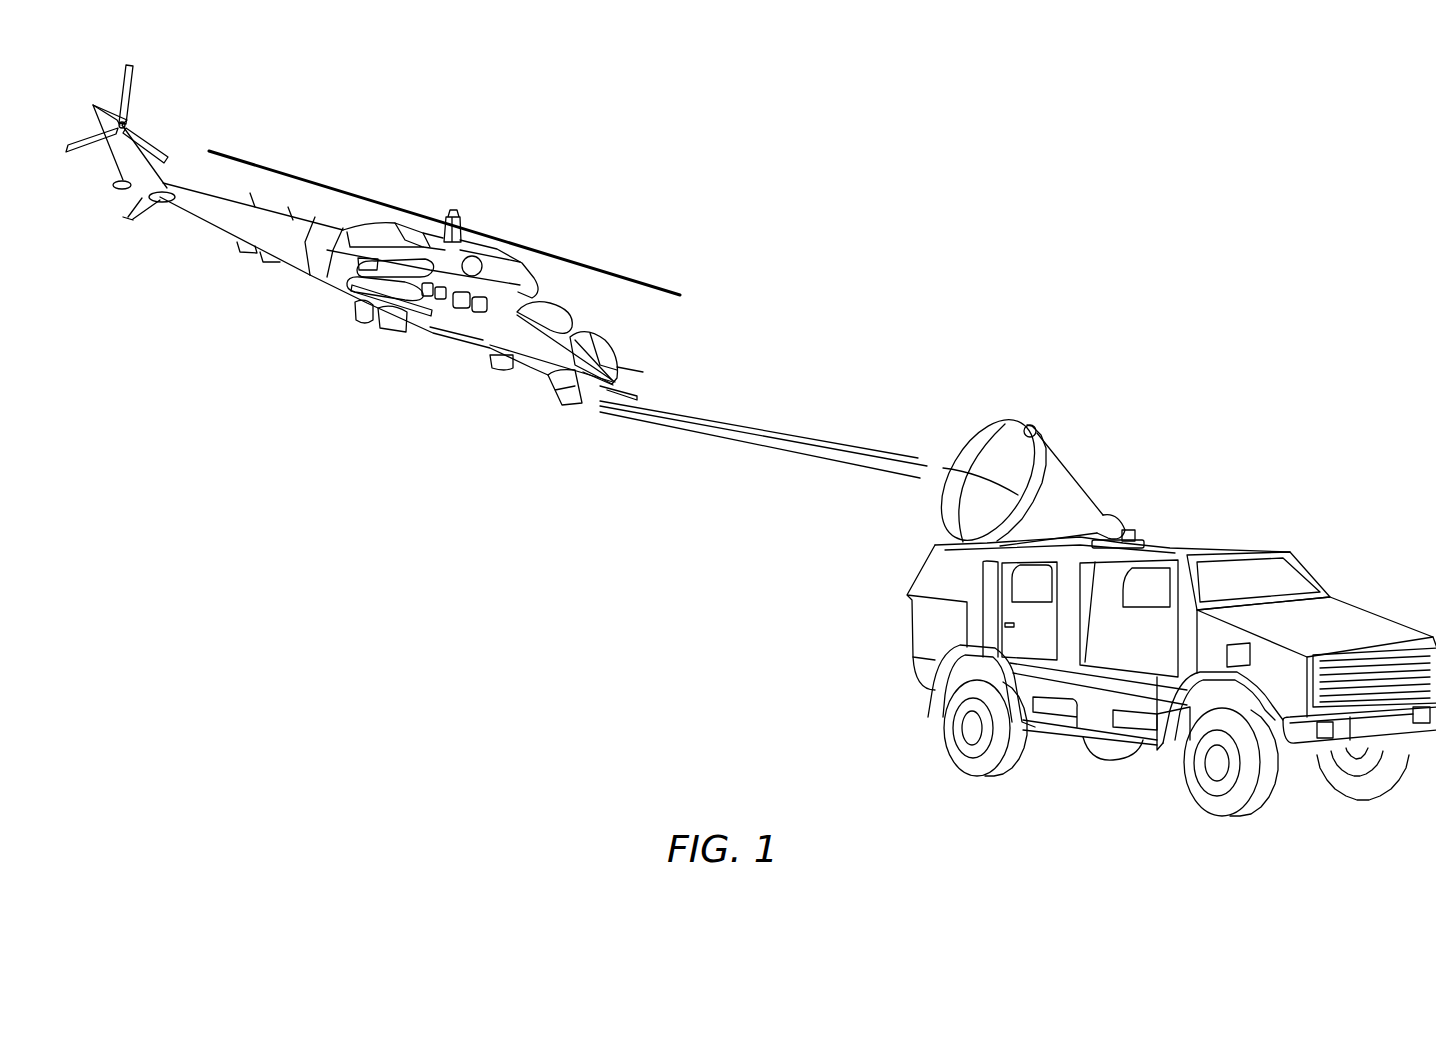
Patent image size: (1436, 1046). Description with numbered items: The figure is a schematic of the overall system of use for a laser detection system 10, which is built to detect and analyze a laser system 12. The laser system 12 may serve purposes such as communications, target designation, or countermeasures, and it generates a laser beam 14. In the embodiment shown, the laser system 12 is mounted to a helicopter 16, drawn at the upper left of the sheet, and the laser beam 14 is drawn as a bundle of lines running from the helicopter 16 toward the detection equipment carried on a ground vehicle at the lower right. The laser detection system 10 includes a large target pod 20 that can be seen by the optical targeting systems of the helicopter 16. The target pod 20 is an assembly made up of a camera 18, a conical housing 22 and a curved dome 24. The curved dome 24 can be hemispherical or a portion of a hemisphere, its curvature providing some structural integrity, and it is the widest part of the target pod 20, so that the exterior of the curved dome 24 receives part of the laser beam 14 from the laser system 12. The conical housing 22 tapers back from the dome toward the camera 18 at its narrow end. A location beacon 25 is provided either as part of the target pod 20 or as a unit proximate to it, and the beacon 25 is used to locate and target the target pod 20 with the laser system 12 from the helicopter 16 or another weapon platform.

The laser detection system 10 is at (1051, 443).
The laser system 12 is at (567, 405).
The laser beam 14 is at (820, 438).
The helicopter 16 is at (380, 330).
The camera 18 is at (1113, 528).
The target pod 20 is at (1067, 467).
The conical housing 22 is at (1068, 490).
The curved dome 24 is at (970, 455).
The location beacon 25 is at (1032, 426).